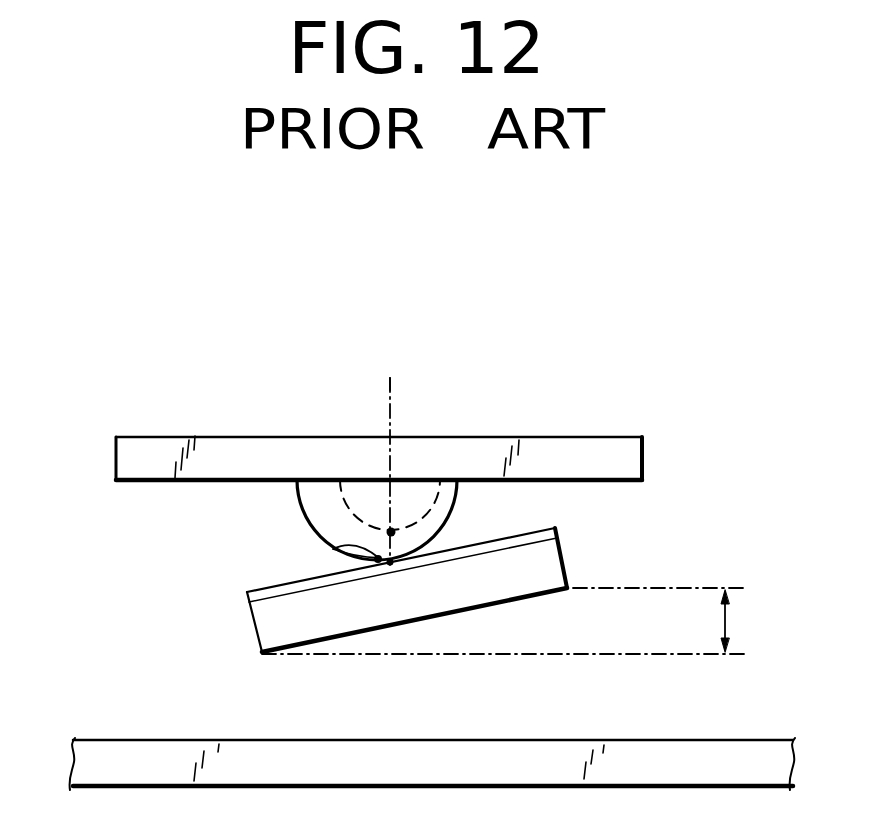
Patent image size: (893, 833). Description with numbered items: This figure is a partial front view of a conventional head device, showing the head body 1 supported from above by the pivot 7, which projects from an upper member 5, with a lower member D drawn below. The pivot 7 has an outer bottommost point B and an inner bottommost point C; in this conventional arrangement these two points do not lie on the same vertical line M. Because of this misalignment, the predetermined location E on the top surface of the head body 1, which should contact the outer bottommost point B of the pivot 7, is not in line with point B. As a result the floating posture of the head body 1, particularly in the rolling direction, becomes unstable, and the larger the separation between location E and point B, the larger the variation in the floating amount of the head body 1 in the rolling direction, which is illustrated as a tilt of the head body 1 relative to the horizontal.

The upper plate 5 is at (588, 448).
The pivot 7 is at (298, 503).
The head body 1 is at (543, 562).
The vertical line M is at (388, 385).
The inner bottommost point of the pivot C is at (393, 530).
The outer bottommost point of the pivot B is at (352, 545).
The predetermined location of the top surface of the head body E is at (390, 562).
The base plate D is at (101, 760).